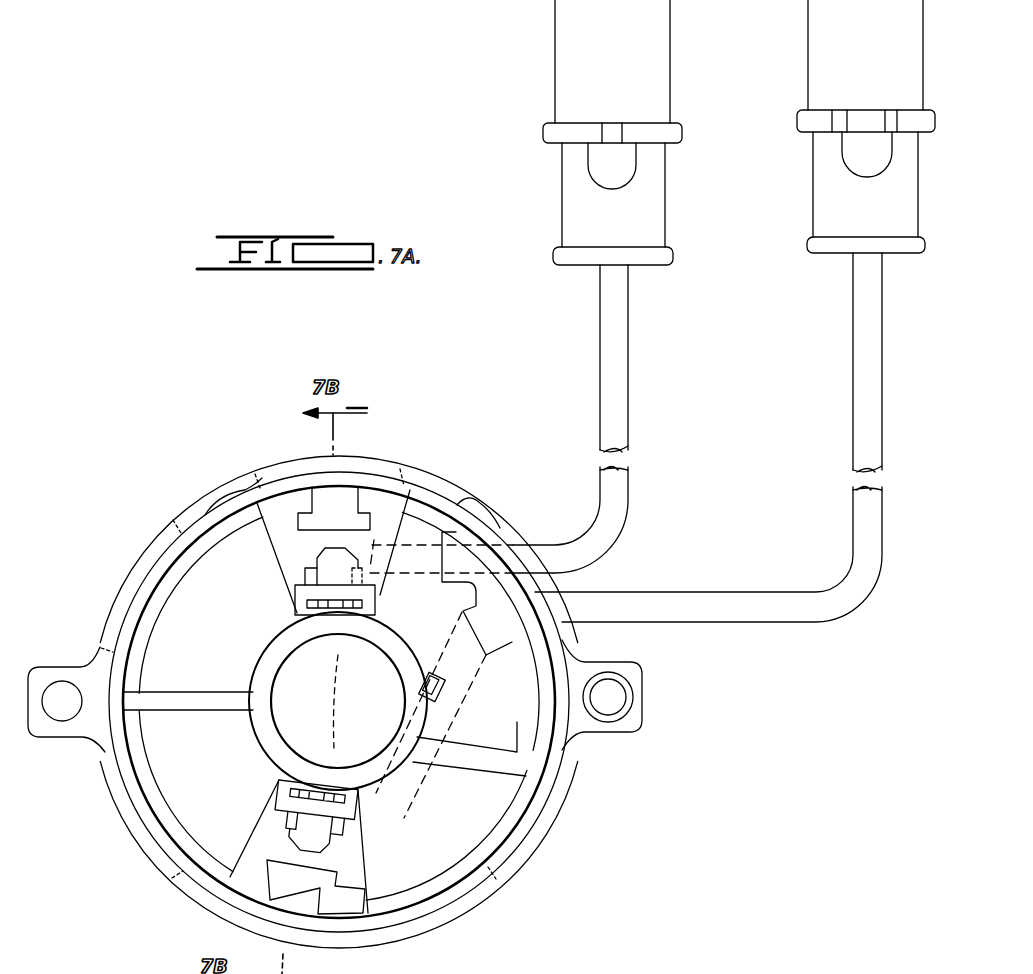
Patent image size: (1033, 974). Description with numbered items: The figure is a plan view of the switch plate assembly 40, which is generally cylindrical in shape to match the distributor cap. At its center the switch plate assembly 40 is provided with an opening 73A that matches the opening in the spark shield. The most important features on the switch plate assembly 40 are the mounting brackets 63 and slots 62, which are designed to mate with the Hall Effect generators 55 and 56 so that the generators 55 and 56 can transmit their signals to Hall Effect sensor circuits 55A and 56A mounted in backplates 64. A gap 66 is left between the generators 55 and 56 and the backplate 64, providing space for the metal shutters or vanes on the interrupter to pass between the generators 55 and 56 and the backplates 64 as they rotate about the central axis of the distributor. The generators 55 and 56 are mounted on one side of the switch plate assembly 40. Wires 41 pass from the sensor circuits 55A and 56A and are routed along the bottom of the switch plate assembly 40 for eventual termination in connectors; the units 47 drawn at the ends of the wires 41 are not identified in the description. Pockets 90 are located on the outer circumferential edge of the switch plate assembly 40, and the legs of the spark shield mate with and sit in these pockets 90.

The switch plate assembly 40 is at (136, 880).
The wires 41 is at (600, 353).
The valve/solenoid unit 47 is at (630, 67).
The Hall Effect generator 55 is at (333, 578).
The Hall Effect sensor circuit 55A is at (343, 520).
The Hall Effect generator 56 is at (310, 824).
The Hall Effect sensor circuit 56A is at (315, 899).
The slots 62 is at (346, 594).
The mounting brackets 63 is at (300, 590).
The backplates 64 is at (300, 531).
The gap 66 is at (333, 548).
The opening 73A is at (283, 666).
The pockets 90 is at (140, 565).